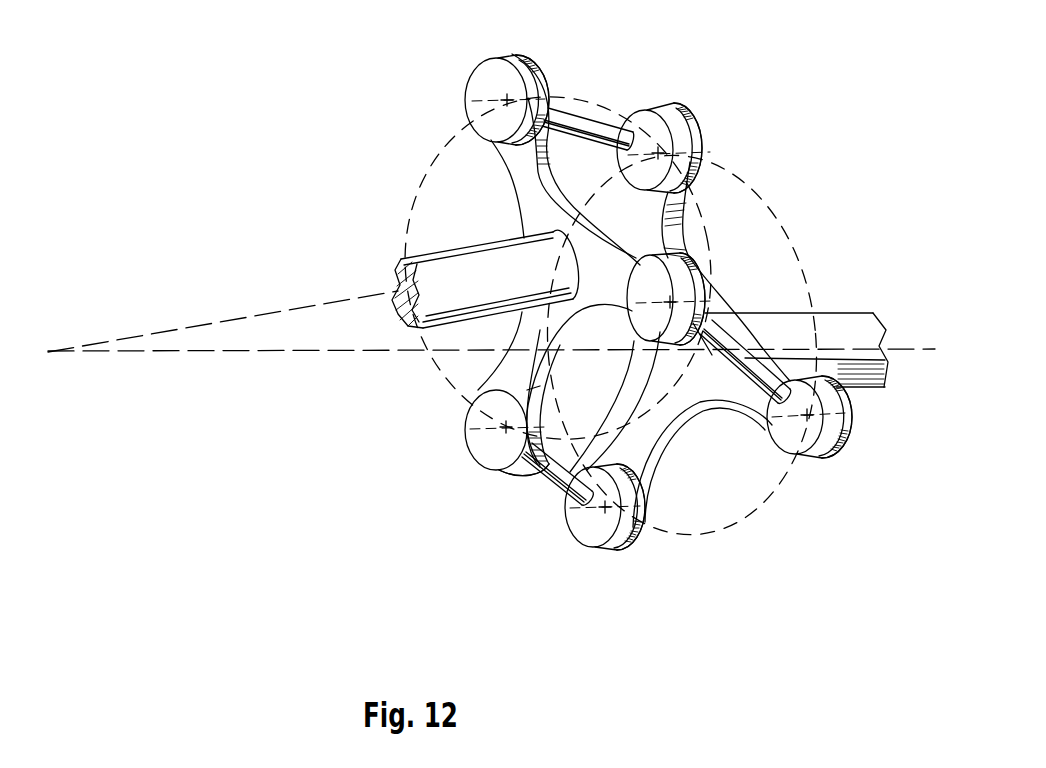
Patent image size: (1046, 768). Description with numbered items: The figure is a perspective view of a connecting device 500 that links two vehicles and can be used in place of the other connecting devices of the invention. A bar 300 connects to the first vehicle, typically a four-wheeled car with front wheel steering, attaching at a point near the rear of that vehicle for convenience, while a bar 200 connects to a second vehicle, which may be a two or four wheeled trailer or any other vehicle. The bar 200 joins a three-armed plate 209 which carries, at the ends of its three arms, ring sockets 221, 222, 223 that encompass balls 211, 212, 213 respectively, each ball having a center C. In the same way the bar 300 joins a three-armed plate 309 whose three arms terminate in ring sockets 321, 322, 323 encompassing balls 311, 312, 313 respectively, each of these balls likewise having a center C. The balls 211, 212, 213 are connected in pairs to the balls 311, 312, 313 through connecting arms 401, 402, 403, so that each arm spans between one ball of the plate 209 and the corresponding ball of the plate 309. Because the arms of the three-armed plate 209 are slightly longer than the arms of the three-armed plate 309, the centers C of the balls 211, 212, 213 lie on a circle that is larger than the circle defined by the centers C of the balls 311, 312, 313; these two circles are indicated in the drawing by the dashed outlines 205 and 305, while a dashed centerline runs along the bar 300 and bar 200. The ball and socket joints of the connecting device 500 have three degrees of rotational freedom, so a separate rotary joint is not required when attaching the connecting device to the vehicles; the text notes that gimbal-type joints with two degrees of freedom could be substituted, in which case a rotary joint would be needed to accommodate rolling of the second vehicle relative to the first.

The bar 200 is at (838, 330).
The second spider pitch circle 205 is at (778, 223).
The three-armed plate 209 is at (677, 400).
The ball 211 is at (787, 437).
The ball 212 is at (650, 128).
The ball 213 is at (588, 537).
The ring socket 221 is at (822, 467).
The ring socket 222 is at (690, 148).
The ring socket 223 is at (620, 553).
The bar 300 is at (482, 255).
The first spider pitch circle 305 is at (433, 157).
The three-armed plate 309 is at (592, 290).
The ball 311 is at (645, 282).
The ball 312 is at (480, 88).
The ball 313 is at (473, 428).
The ring socket 321 is at (682, 267).
The ring socket 322 is at (523, 65).
The ring socket 323 is at (520, 462).
The connecting arm 401 is at (740, 360).
The connecting arm 402 is at (587, 123).
The connecting arm 403 is at (560, 477).
The connecting device 500 is at (362, 571).
The center C is at (507, 98).